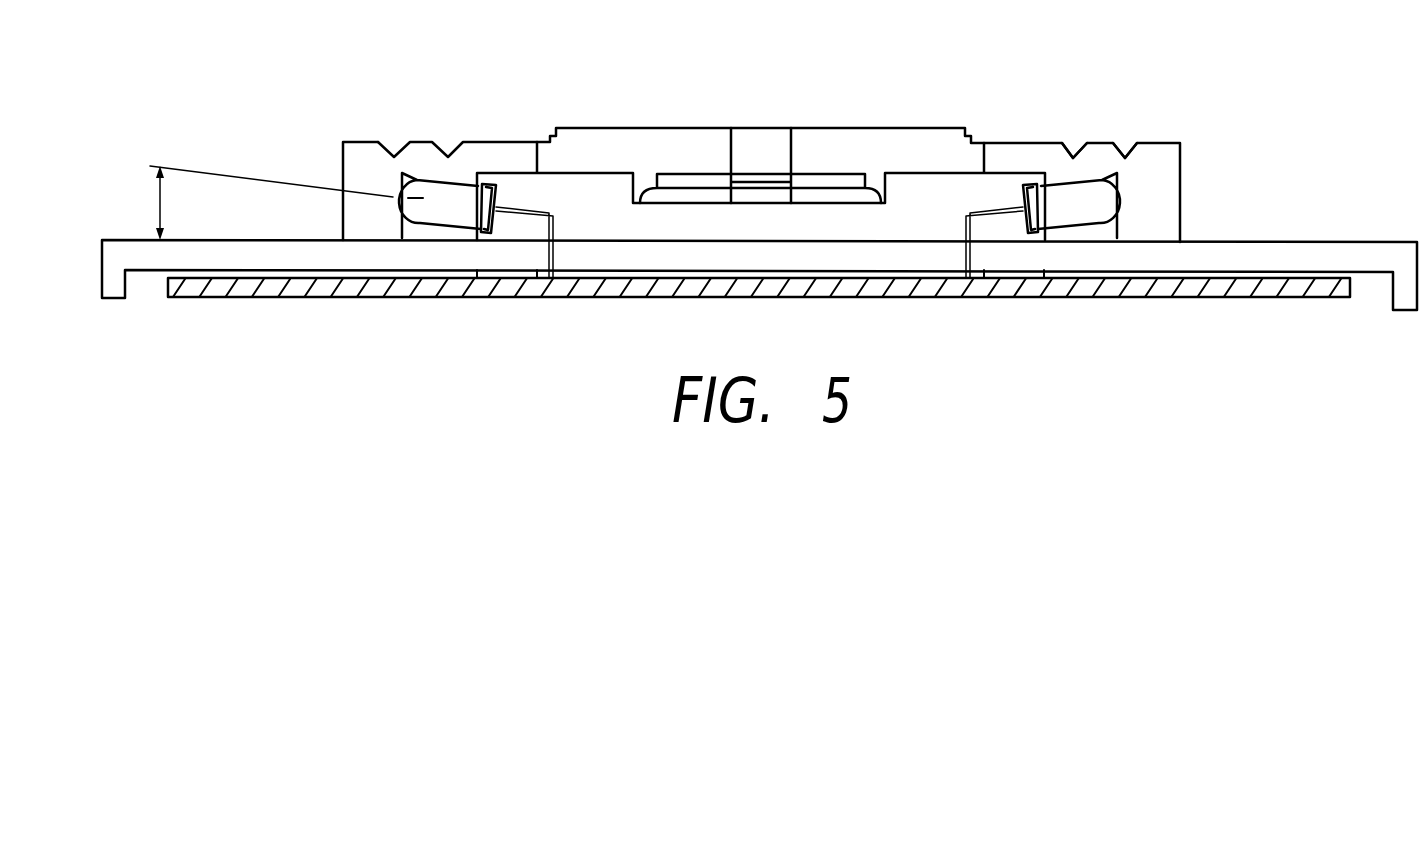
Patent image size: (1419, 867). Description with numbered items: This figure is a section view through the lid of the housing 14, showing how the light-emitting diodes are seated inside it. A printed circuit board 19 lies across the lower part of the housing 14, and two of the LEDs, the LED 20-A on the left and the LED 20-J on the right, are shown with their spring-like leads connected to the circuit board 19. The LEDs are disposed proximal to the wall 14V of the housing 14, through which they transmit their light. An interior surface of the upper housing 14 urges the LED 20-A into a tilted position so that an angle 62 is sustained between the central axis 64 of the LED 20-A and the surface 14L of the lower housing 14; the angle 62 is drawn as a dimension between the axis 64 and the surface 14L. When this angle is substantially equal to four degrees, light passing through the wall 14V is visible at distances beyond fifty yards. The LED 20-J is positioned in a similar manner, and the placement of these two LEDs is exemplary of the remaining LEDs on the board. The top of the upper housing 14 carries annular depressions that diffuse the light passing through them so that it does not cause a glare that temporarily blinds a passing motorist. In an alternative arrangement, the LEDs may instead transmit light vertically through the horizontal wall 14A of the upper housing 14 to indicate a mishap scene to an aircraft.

The housing 14 is at (1200, 162).
The horizontal wall 14A is at (518, 142).
The surface of the lower housing 14L is at (118, 238).
The wall 14V is at (342, 167).
The printed circuit board 19 is at (1297, 290).
The LED 20-A is at (415, 222).
The LED 20-J is at (1103, 222).
The angle 62 is at (165, 203).
The central axis 64 is at (262, 180).